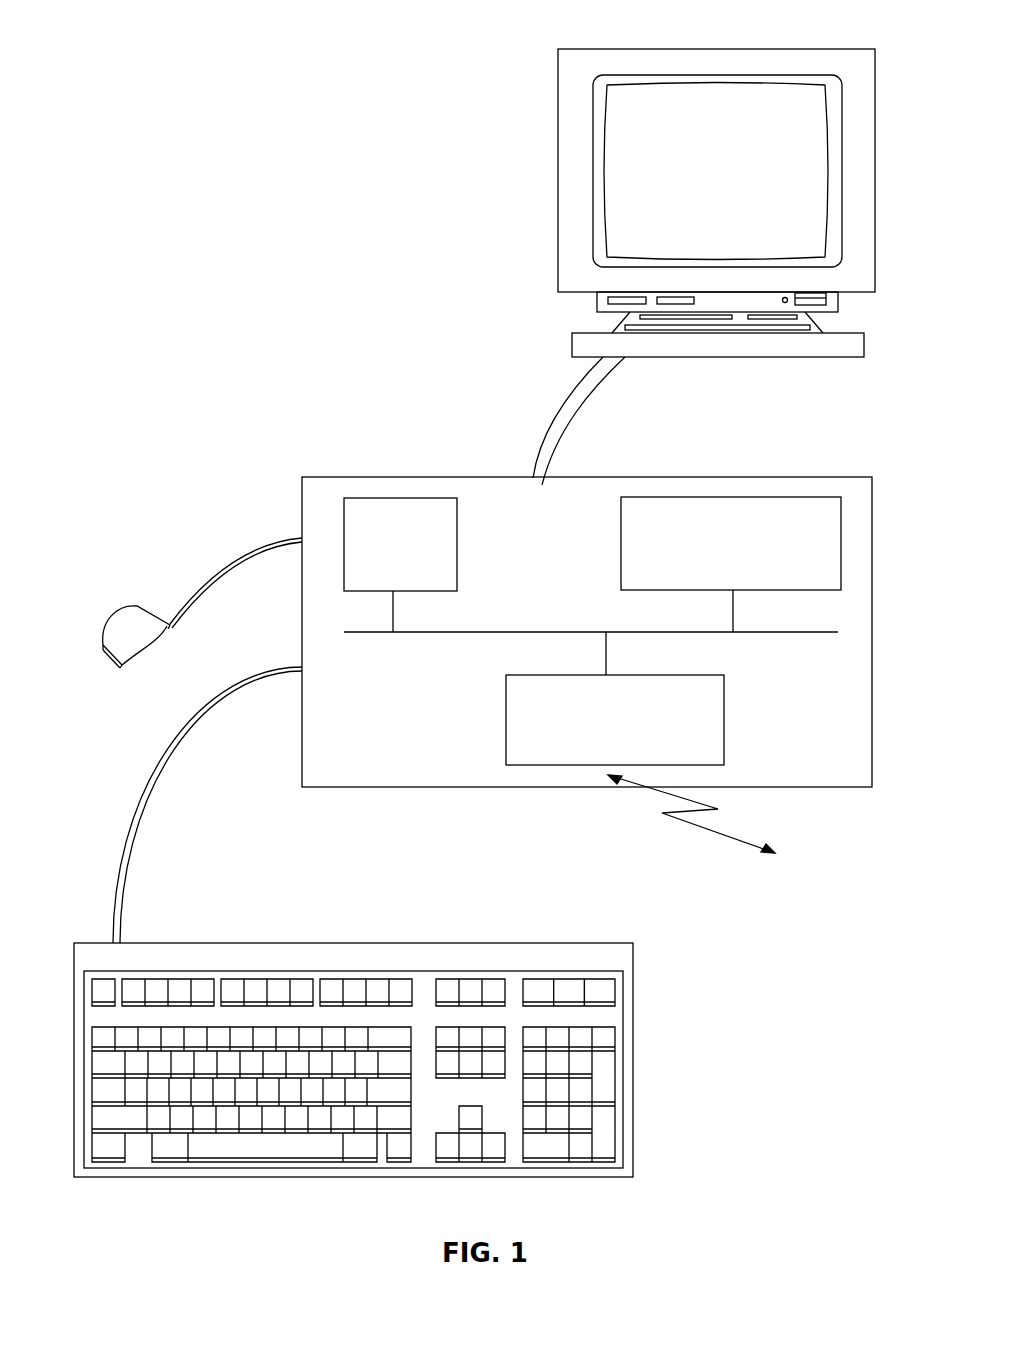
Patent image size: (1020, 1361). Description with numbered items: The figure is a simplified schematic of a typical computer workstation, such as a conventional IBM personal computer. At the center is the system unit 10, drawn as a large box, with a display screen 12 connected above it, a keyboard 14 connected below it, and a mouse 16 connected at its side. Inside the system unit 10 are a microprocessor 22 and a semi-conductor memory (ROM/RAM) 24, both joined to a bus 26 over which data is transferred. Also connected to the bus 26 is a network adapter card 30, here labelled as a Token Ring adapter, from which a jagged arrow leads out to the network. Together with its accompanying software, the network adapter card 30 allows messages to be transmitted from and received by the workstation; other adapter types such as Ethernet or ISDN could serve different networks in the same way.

The system unit 10 is at (828, 477).
The display screen 12 is at (580, 50).
The keyboard 14 is at (295, 943).
The mouse 16 is at (138, 610).
The microprocessor 22 is at (382, 497).
The semi-conductor memory (ROM/RAM) 24 is at (665, 497).
The bus 26 is at (818, 632).
The network adapter card 30 is at (841, 537).